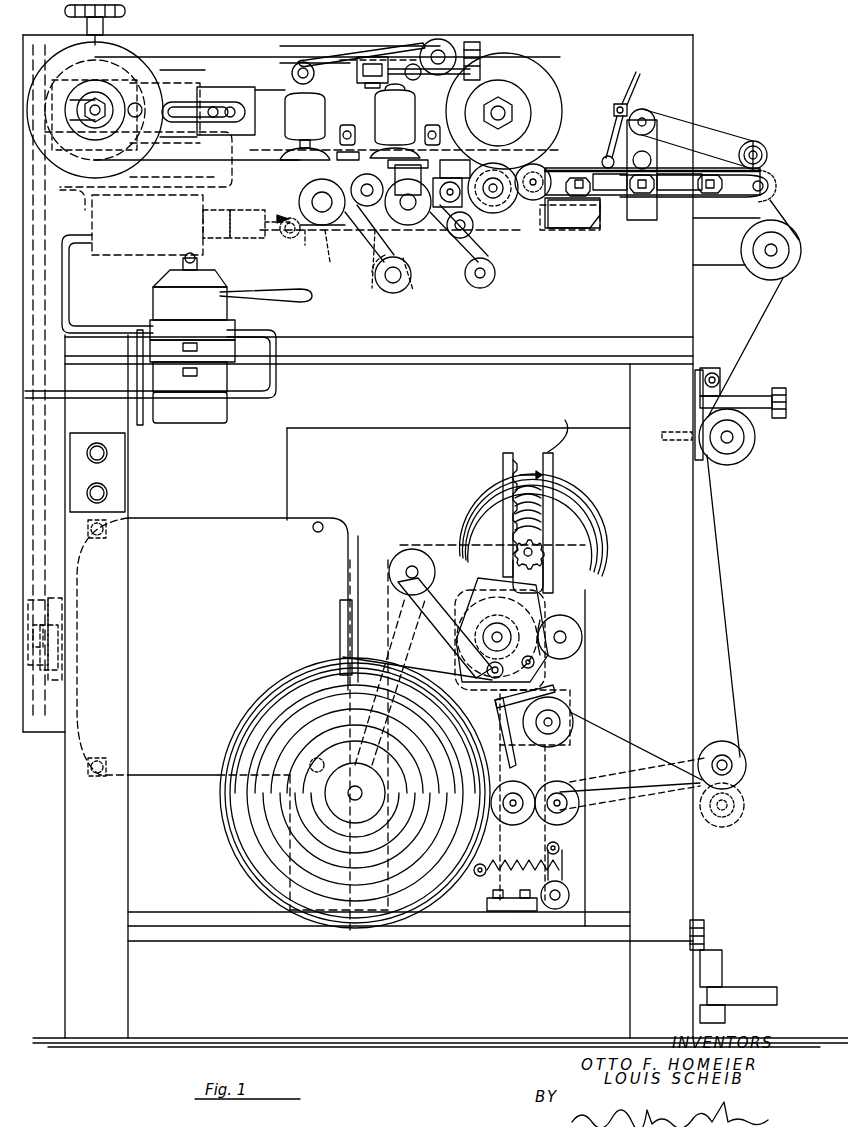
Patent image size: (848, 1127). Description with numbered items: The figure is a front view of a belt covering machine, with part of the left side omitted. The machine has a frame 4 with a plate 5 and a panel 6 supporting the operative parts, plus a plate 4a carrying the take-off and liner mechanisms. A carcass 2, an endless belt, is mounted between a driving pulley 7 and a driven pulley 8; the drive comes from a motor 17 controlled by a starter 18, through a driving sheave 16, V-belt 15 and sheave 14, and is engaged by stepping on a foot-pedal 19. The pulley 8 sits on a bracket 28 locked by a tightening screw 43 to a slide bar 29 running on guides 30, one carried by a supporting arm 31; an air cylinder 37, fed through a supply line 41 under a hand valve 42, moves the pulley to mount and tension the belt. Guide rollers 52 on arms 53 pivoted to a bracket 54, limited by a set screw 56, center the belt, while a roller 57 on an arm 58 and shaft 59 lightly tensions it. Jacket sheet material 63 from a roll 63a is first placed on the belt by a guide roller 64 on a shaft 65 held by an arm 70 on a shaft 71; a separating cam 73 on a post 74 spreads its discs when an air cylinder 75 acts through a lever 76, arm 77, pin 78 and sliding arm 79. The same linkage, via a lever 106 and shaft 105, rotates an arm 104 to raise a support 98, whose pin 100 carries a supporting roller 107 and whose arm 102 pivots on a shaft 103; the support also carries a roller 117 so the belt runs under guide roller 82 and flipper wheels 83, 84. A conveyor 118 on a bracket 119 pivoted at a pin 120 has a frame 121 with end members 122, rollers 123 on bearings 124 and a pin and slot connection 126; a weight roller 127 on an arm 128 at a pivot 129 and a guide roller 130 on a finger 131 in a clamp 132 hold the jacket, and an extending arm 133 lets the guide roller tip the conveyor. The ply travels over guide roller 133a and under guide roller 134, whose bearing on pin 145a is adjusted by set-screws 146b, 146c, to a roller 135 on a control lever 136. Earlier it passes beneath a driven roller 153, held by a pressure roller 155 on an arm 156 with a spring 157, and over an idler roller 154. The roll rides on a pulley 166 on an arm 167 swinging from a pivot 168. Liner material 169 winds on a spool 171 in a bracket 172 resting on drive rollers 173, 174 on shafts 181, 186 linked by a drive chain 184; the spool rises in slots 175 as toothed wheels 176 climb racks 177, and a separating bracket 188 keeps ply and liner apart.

The carcass 2 is at (240, 48).
The frame 4 is at (685, 878).
The plate 4a is at (440, 545).
The plate 5 is at (693, 349).
The panel 6 is at (693, 300).
The driving pulley 7 is at (528, 85).
The driven pulley 8 is at (120, 72).
The sheave 14 is at (40, 45).
The V-belt 15 is at (38, 685).
The driving sheave 16 is at (62, 604).
The motor 17 is at (200, 524).
The starter 18 is at (125, 490).
The foot-pedal 19 is at (748, 986).
The bracket 28 is at (140, 72).
The slide bar 29 is at (230, 88).
The guides 30 is at (233, 117).
The supporting arm 31 is at (278, 90).
The air cylinder 37 is at (190, 70).
The supply line 41 is at (58, 210).
The hand valve 42 is at (228, 292).
The tightening screw 43 is at (125, 8).
The guide rollers 52 is at (478, 40).
The arms 53 is at (448, 82).
The bracket 54 is at (357, 72).
The set screw 56 is at (415, 80).
The roller 57 is at (300, 60).
The arm 58 is at (360, 48).
The shaft 59 is at (440, 40).
The sheet material 63 is at (730, 590).
The roll 63a is at (258, 860).
The guide roller 64 is at (532, 200).
The shaft 65 is at (500, 170).
The arm 70 is at (560, 230).
The shaft 71 is at (585, 205).
The separating cam 73 is at (470, 210).
The post 74 is at (425, 225).
The air cylinder 75 is at (108, 255).
The lever 76 is at (555, 170).
The arm 77 is at (452, 238).
The pin 78 is at (405, 282).
The sliding arm 79 is at (326, 240).
The guide roller 82 is at (335, 148).
The flipper wheel 83 is at (368, 150).
The flipper wheel 84 is at (300, 160).
The support 98 is at (358, 228).
The pin 100 is at (312, 201).
The arm 102 is at (460, 270).
The shaft 103 is at (488, 286).
The arm 104 is at (370, 262).
The shaft 105 is at (400, 295).
The lever 106 is at (380, 295).
The supporting roller 107 is at (290, 238).
The roller 117 is at (385, 180).
The conveyor 118 is at (700, 168).
The bracket 119 is at (650, 222).
The pin 120 is at (651, 160).
The frame 121 is at (668, 196).
The end members 122 is at (715, 197).
The rollers 123 is at (768, 175).
The bearings 124 is at (770, 188).
The pin and slot connection 126 is at (715, 174).
The roller 127 is at (760, 145).
The arm 128 is at (672, 125).
The pivot 129 is at (645, 108).
The guide roller 130 is at (606, 156).
The finger 131 is at (632, 98).
The clamp 132 is at (614, 108).
The extending arm 133 is at (603, 230).
The guide roller 133a is at (775, 280).
The guide roller 134 is at (745, 455).
The roller 135 is at (745, 755).
The control lever 136 is at (655, 790).
The pin 145a is at (672, 442).
The set-screw 146b is at (760, 410).
The set-screw 146c is at (722, 380).
The driven roller 153 is at (565, 842).
The idler roller 154 is at (570, 712).
The pressure roller 155 is at (540, 790).
The arm 156 is at (575, 820).
The spring 157 is at (490, 896).
The pulley 166 is at (345, 822).
The arm 167 is at (393, 615).
The pivot 168 is at (412, 548).
The liner material 169 is at (445, 665).
The spool 171 is at (560, 515).
The bracket 172 is at (554, 470).
The drive roller 173 is at (470, 620).
The drive roller 174 is at (560, 616).
The slots 175 is at (563, 426).
The toothed wheels 176 is at (545, 548).
The racks 177 is at (502, 458).
The shaft 181 is at (497, 623).
The drive chain 184 is at (535, 670).
The shaft 186 is at (582, 637).
The separating bracket 188 is at (495, 698).